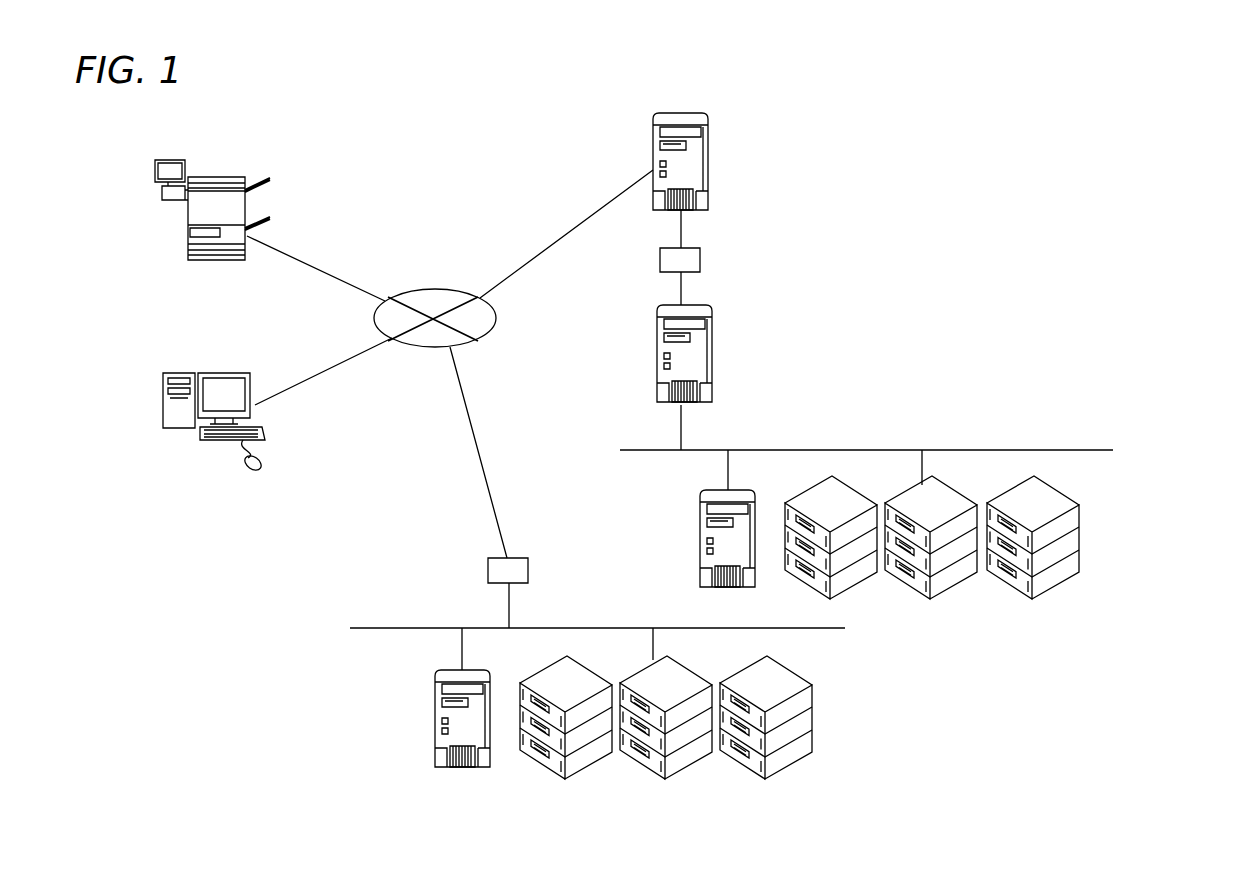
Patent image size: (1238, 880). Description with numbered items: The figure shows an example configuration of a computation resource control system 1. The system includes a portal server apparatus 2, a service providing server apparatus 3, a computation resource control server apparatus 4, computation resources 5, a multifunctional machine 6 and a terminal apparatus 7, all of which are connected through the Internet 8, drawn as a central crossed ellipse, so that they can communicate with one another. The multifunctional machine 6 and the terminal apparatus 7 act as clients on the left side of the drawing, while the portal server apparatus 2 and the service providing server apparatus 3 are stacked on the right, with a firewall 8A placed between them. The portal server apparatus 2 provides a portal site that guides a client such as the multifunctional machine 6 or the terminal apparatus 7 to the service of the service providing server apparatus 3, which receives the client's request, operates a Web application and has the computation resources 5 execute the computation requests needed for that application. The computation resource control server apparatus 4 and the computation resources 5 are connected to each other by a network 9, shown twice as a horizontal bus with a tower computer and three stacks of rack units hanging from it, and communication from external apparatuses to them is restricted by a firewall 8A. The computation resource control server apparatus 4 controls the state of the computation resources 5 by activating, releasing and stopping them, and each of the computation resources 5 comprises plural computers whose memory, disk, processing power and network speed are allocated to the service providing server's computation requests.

The computation resource control system 1 is at (763, 82).
The portal server apparatus 2 is at (707, 171).
The service providing server apparatus 3 is at (711, 345).
The computation resource control server apparatus 4 is at (700, 527).
The computation resources 5 is at (935, 602).
The multifunctional machine 6 is at (206, 178).
The terminal apparatus 7 is at (212, 373).
The Internet 8 is at (422, 288).
The firewall 8A is at (700, 259).
The network 9 is at (841, 448).